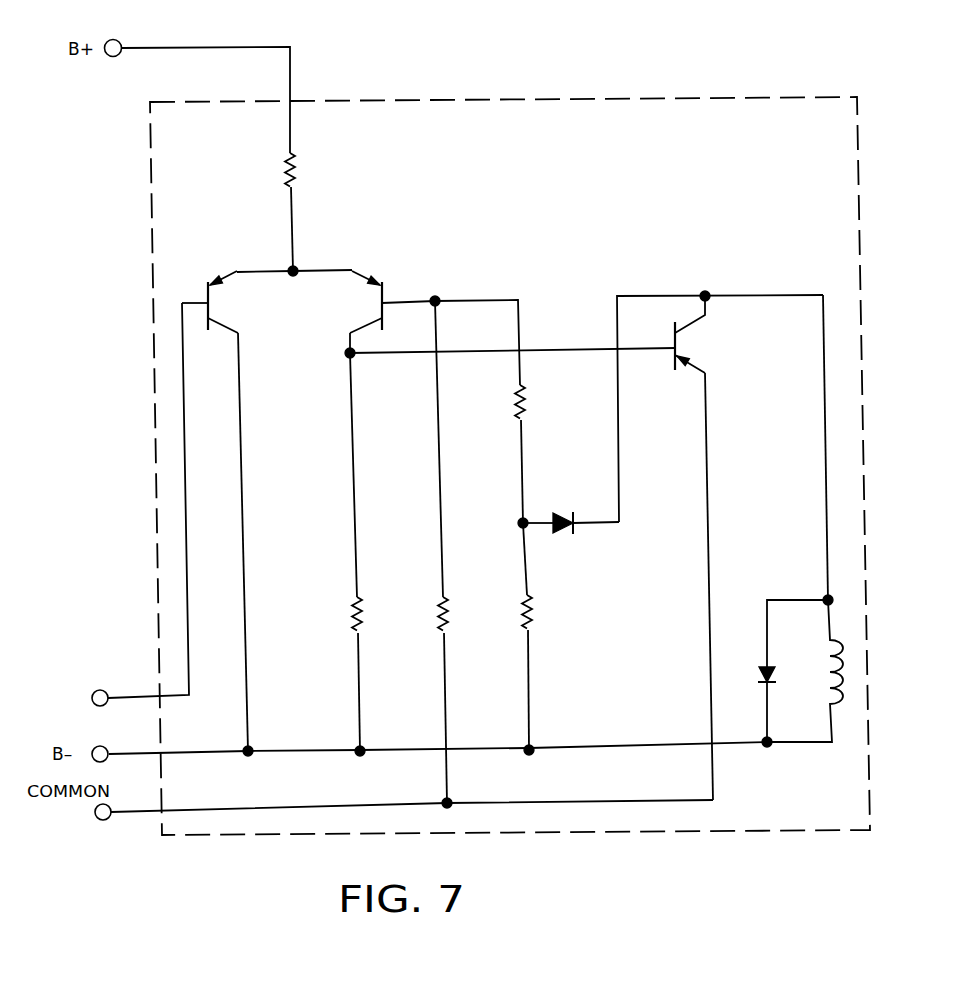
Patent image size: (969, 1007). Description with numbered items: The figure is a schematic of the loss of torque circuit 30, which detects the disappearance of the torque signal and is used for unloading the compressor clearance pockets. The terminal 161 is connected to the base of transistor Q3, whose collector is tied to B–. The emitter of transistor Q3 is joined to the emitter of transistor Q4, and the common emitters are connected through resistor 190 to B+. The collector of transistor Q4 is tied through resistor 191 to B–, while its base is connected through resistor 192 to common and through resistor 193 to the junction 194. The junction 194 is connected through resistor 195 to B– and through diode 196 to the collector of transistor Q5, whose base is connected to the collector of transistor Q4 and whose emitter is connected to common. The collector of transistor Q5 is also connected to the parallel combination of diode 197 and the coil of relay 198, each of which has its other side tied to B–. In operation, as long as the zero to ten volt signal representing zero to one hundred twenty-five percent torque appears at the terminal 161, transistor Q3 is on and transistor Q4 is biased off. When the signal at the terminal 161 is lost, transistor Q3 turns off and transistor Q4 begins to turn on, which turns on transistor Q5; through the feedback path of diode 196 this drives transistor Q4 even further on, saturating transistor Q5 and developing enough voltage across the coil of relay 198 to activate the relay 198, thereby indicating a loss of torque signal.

The loss of torque circuit 30 is at (528, 97).
The resistor 190 is at (295, 160).
The resistor 191 is at (352, 612).
The resistor 192 is at (438, 606).
The resistor 193 is at (525, 394).
The junction 194 is at (518, 520).
The resistor 195 is at (532, 611).
The diode 196 is at (551, 510).
The diode 197 is at (760, 668).
The relay 198 is at (830, 666).
The terminal 161 is at (98, 689).
The transistor Q3 is at (220, 303).
The transistor Q4 is at (368, 300).
The transistor Q5 is at (698, 348).